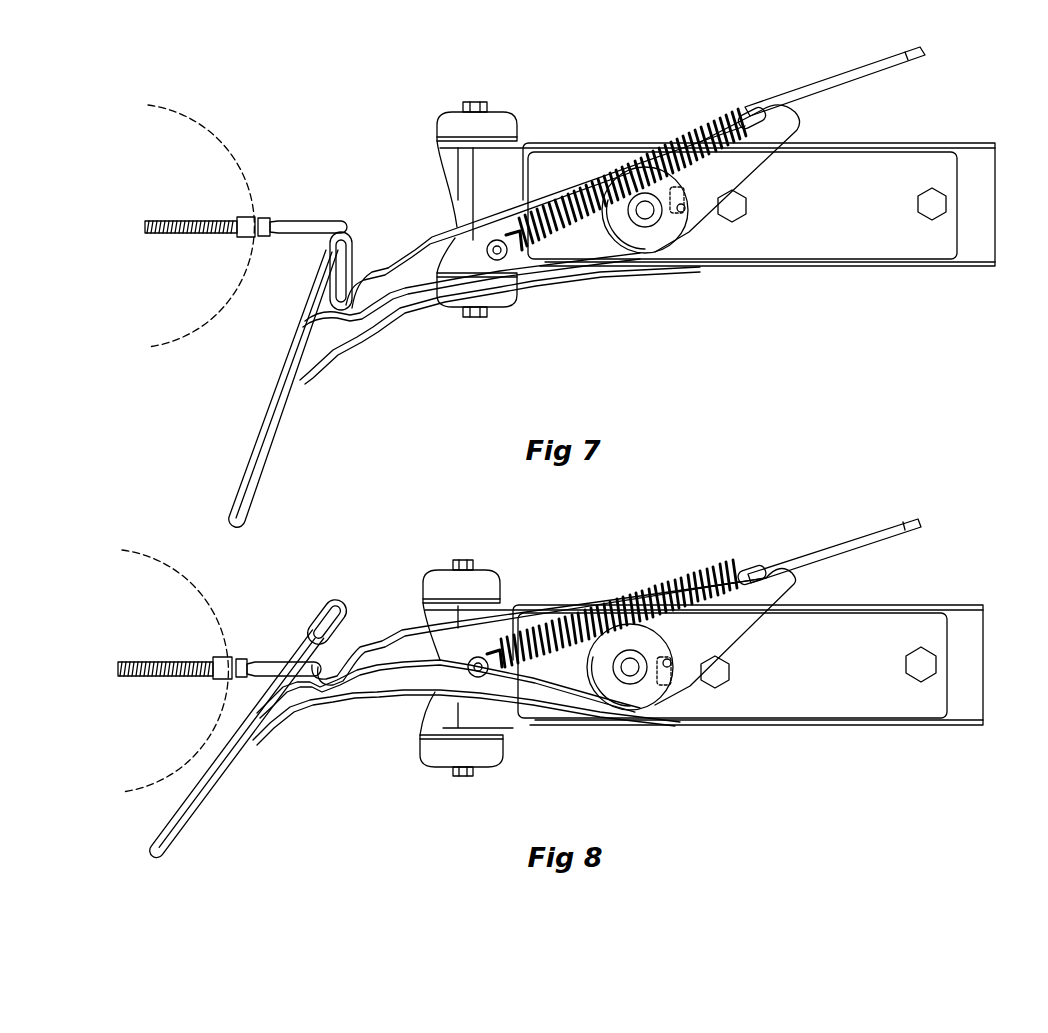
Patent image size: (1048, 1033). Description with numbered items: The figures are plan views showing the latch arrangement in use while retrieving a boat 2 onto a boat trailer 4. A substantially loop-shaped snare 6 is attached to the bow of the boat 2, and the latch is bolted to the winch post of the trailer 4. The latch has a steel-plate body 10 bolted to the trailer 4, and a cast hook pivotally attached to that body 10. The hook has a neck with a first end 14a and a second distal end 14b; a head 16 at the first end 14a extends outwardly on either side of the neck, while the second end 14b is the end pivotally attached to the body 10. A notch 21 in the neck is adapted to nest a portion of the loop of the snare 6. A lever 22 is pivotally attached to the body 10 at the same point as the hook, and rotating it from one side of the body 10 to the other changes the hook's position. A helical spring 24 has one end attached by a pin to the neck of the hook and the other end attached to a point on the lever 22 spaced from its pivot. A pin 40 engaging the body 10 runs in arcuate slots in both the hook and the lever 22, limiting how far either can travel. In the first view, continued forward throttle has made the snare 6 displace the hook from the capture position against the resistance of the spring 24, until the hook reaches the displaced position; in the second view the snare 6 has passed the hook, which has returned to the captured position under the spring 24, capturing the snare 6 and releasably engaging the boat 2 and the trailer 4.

In FIG. 7, the boat 2 is at (193, 157).
In FIG. 8, the boat 2 is at (140, 581).
In FIG. 7, the boat trailer 4 is at (970, 250).
In FIG. 8, the boat trailer 4 is at (970, 615).
In FIG. 7, the snare 6 is at (318, 226).
In FIG. 8, the snare 6 is at (270, 668).
In FIG. 7, the body 10 is at (860, 163).
In FIG. 8, the body 10 is at (873, 618).
In FIG. 7, the first end 14a is at (330, 342).
In FIG. 8, the first end 14a is at (287, 703).
In FIG. 7, the second distal end 14b is at (620, 255).
In FIG. 8, the second distal end 14b is at (600, 712).
In FIG. 7, the head 16 is at (327, 273).
In FIG. 8, the head 16 is at (331, 619).
In FIG. 7, the notch 21 is at (348, 283).
In FIG. 7, the lever 22 is at (927, 52).
In FIG. 8, the lever 22 is at (903, 523).
In FIG. 7, the helical spring 24 is at (693, 153).
In FIG. 8, the helical spring 24 is at (693, 583).
In FIG. 7, the pin 40 is at (693, 217).
In FIG. 8, the pin 40 is at (673, 673).